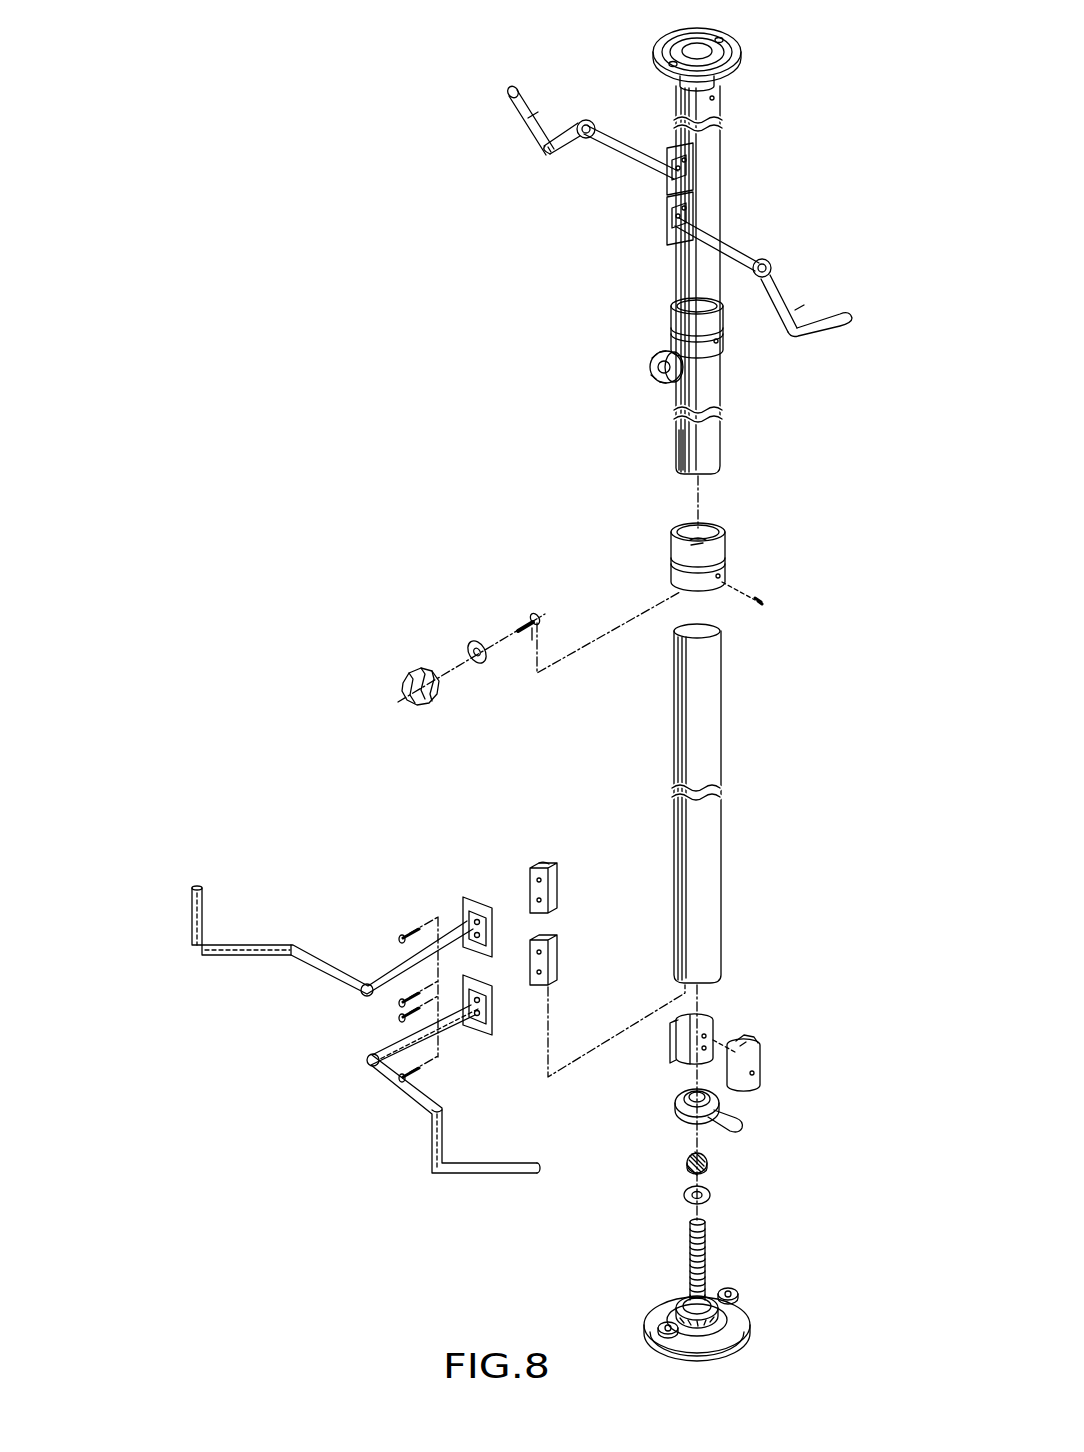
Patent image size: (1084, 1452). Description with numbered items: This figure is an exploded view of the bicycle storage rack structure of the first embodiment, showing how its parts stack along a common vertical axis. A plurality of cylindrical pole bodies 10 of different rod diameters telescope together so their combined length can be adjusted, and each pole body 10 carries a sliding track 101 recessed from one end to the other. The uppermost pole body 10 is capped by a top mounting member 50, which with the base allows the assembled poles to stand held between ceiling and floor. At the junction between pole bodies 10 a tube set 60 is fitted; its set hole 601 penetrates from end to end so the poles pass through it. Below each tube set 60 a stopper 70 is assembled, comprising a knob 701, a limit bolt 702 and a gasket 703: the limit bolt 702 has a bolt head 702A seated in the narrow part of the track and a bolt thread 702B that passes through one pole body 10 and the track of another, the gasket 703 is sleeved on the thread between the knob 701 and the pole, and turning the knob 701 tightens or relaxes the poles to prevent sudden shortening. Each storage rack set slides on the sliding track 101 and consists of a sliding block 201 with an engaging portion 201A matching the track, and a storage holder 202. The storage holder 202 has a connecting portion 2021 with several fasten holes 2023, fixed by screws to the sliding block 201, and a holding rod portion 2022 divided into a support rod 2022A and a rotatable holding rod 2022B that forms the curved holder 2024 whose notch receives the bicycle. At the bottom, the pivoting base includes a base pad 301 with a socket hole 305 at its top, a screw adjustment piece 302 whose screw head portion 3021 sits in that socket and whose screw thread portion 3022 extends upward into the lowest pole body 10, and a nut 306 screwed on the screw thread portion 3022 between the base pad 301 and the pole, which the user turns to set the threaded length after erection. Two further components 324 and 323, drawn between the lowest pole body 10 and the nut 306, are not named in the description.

The top mounting member 50 is at (655, 53).
The pole body 10 is at (724, 213).
The tube set 60 is at (735, 331).
The set hole 601 is at (703, 517).
The stopper 70 is at (650, 375).
The sliding track 101 is at (675, 446).
The limit bolt 702 is at (534, 618).
The bolt head 702A is at (545, 620).
The bolt thread 702B is at (531, 636).
The gasket 703 is at (472, 645).
The knob 701 is at (403, 685).
The connecting portion 2021 is at (668, 232).
The support rod 2022A is at (630, 154).
The holding rod 2022B is at (548, 154).
The curved holder 2024 is at (513, 100).
The holding rod portion 2022 is at (555, 273).
The storage holder 202 is at (563, 357).
The fasten holes 2023 is at (458, 915).
The sliding block 201 is at (538, 862).
The engaging portion 201A is at (548, 862).
The clamp halves 324 is at (763, 1043).
The cam lever 323 is at (735, 1116).
The nut 306 is at (710, 1160).
The screw adjustment piece 302 is at (715, 1238).
The screw thread portion 3022 is at (708, 1251).
The socket hole 305 is at (690, 1305).
The base pad 301 is at (656, 1320).
The screw head portion 3021 is at (750, 1318).